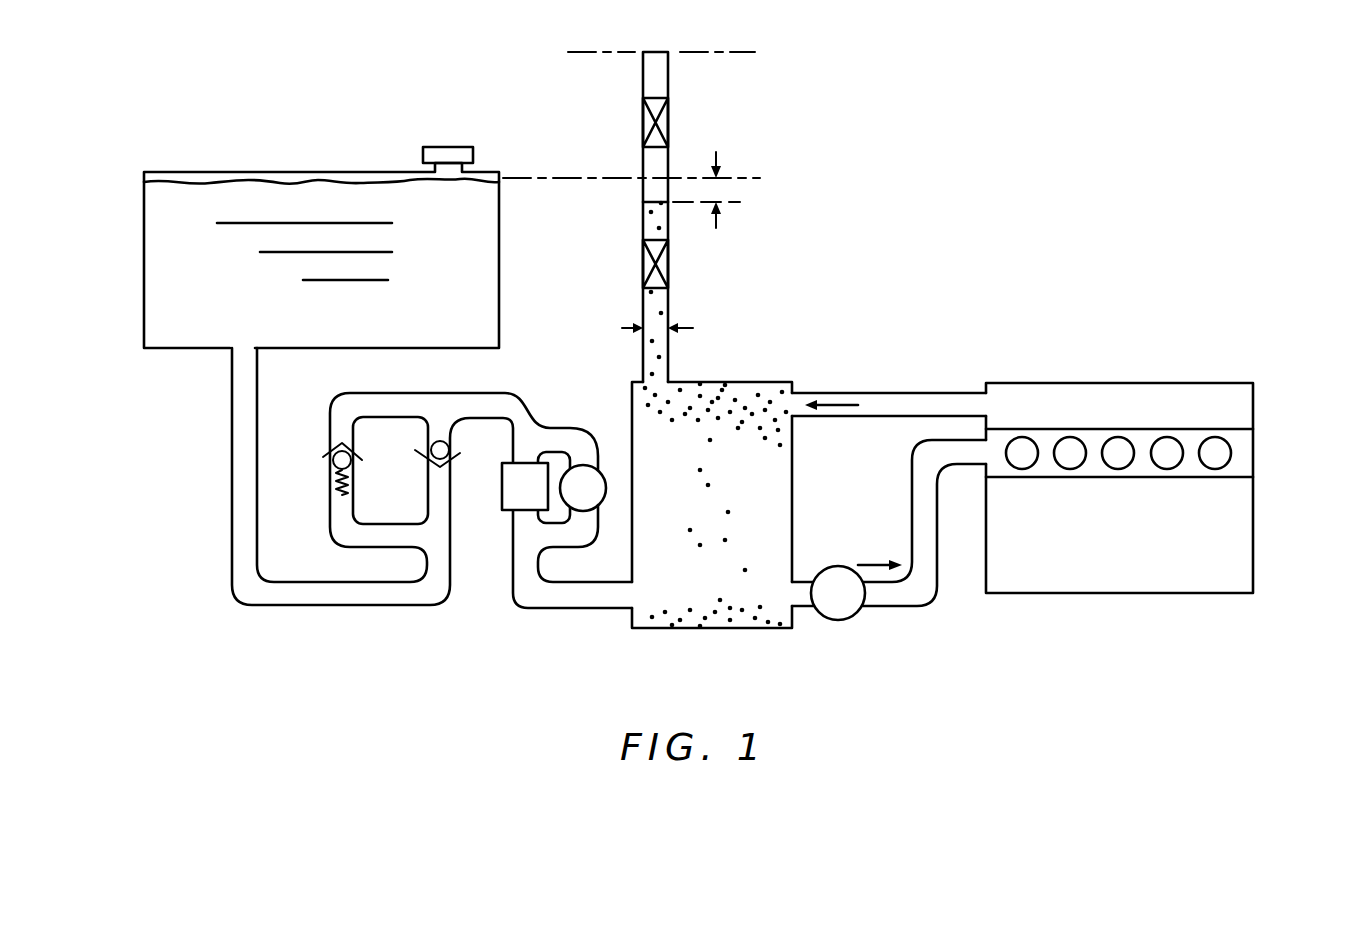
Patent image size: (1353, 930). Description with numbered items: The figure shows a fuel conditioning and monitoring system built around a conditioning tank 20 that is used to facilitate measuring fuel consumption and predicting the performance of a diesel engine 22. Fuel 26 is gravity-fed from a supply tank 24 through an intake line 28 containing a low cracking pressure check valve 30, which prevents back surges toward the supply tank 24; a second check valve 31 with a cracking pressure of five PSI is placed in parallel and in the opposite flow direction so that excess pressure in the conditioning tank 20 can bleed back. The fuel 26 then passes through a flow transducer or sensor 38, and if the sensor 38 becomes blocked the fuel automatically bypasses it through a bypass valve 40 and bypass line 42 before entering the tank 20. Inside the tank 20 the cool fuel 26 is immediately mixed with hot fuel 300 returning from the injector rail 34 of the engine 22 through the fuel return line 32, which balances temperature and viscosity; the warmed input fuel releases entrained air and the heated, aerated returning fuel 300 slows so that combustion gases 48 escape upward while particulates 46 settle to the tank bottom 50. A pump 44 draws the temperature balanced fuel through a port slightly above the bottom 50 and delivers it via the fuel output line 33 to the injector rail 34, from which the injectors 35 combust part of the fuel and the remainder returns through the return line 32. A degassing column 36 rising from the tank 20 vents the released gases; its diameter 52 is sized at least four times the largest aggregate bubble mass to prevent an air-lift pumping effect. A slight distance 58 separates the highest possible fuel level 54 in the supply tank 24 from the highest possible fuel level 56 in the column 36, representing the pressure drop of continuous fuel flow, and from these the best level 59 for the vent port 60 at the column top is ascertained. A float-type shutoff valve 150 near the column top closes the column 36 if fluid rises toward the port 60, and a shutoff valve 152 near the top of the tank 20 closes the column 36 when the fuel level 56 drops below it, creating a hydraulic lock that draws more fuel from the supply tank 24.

The conditioning tank 20 is at (705, 643).
The diesel engine 22 is at (1146, 468).
The supply tank 24 is at (558, 271).
The fuel 26 is at (176, 262).
The intake line 28 is at (404, 582).
The check valve 30 is at (430, 445).
The second check valve 31 is at (330, 462).
The fuel return line 32 is at (822, 393).
The fuel output line 33 is at (798, 582).
The injector rail 34 is at (1067, 429).
The injectors 35 is at (1120, 437).
The degassing column 36 is at (643, 362).
The flow transducer or sensor 38 is at (500, 490).
The bypass valve 40 is at (602, 471).
The bypass line 42 is at (556, 548).
The pump 44 is at (838, 620).
The particulates 46 is at (745, 392).
The combustion gases 48 is at (690, 392).
The tank bottom 50 is at (768, 630).
The diameter 52 is at (671, 329).
The highest possible fuel level in supply tank 54 is at (738, 178).
The highest possible fuel level in column 56 is at (738, 202).
The distance 58 is at (716, 178).
The level 59 is at (743, 49).
The port 60 is at (650, 52).
The shutoff valve 150 is at (668, 115).
The shutoff valve 152 is at (668, 267).
The fuel 300 is at (893, 400).